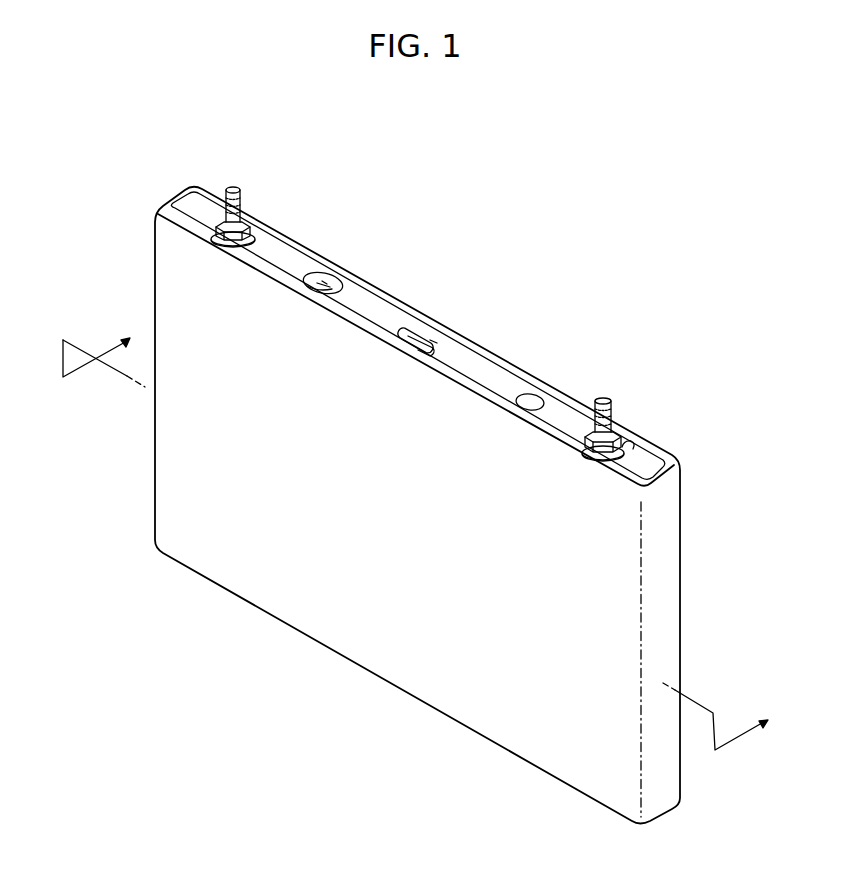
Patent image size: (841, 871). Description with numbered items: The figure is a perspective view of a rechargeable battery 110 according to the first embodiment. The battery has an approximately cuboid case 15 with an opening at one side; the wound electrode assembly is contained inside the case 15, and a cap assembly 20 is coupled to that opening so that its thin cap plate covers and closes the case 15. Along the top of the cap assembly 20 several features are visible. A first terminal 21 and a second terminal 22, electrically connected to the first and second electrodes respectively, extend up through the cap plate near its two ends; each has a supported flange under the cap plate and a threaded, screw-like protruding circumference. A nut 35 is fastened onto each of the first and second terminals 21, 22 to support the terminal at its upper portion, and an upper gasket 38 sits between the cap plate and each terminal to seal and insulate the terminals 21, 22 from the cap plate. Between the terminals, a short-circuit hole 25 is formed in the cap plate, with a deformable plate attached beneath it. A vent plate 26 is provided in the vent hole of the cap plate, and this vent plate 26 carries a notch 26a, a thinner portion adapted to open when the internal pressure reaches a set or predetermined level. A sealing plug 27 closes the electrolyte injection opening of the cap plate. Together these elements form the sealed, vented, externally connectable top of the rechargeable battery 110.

The rechargeable battery 110 is at (533, 249).
The case 15 is at (373, 647).
The cap assembly 20 is at (507, 357).
The first terminal 21 is at (237, 186).
The second terminal 22 is at (601, 398).
The short-circuit hole 25 is at (331, 282).
The vent plate 26 is at (424, 330).
The notch 26a is at (440, 333).
The sealing plug 27 is at (531, 398).
The nut 35 is at (614, 430).
The upper gasket 38 is at (633, 446).